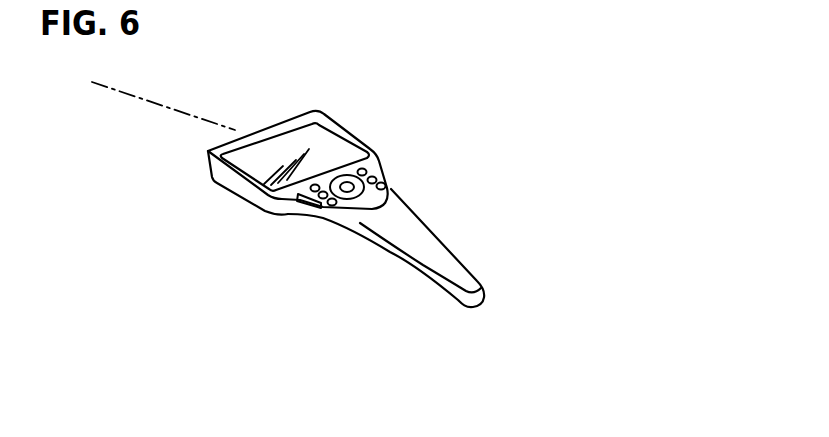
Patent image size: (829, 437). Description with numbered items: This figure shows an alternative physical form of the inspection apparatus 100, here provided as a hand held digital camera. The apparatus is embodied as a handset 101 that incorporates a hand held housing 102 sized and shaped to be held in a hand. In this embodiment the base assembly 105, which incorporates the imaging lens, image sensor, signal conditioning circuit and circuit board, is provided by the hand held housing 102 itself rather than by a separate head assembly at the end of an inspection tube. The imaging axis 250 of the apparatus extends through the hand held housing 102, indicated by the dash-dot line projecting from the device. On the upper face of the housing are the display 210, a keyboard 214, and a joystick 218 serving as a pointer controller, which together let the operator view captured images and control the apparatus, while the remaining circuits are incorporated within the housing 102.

The inspection apparatus 100 is at (364, 185).
The handset 101 is at (404, 266).
The hand held housing 102 is at (432, 240).
The base assembly 105 is at (290, 118).
The display 210 is at (325, 148).
The keyboard 214 is at (299, 197).
The joystick 218 is at (378, 178).
The imaging axis 250 is at (112, 88).